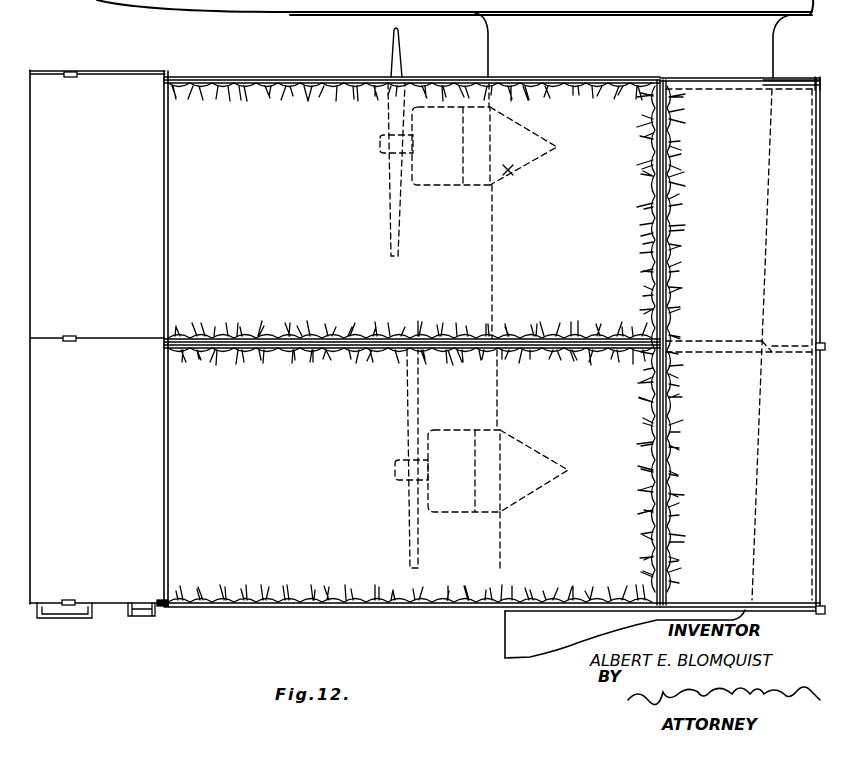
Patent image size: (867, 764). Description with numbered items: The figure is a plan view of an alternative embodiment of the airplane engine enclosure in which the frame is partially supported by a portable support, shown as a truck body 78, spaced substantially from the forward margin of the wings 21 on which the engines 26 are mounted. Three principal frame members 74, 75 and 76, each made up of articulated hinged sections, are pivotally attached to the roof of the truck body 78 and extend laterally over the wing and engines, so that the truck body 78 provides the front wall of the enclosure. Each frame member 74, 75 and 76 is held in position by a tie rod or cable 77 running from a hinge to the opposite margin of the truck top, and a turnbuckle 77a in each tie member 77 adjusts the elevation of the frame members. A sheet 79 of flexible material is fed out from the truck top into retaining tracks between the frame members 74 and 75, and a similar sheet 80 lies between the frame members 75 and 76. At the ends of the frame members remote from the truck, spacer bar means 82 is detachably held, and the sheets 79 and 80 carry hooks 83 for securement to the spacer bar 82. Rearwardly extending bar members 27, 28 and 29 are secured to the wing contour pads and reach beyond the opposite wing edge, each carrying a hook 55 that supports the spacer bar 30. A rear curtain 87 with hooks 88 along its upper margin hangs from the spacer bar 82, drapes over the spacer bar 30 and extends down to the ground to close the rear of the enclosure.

The wings 21 is at (505, 637).
The engines 26 is at (510, 170).
The bar member 27 is at (782, 606).
The bar member 28 is at (772, 355).
The bar member 29 is at (790, 88).
The spacer bar 30 is at (812, 195).
The hook 55 is at (818, 78).
The frame member 74 is at (350, 608).
The frame member 75 is at (300, 350).
The frame member 76 is at (296, 84).
The tie rod or cable 77 is at (114, 77).
The turnbuckle 77a is at (70, 77).
The truck body 78 is at (108, 456).
The sheet of flexible sheet material 79 is at (186, 600).
The sheet of flexible sheet material 80 is at (263, 82).
The spacer bar means 82 is at (656, 110).
The hooks 83 is at (656, 228).
The curtain 87 is at (724, 118).
The hooks 88 is at (668, 112).